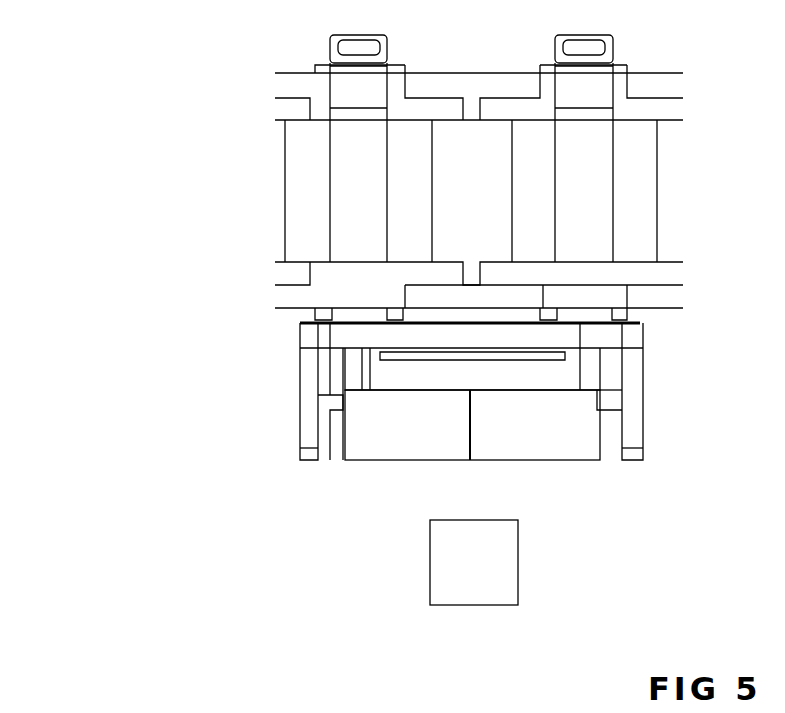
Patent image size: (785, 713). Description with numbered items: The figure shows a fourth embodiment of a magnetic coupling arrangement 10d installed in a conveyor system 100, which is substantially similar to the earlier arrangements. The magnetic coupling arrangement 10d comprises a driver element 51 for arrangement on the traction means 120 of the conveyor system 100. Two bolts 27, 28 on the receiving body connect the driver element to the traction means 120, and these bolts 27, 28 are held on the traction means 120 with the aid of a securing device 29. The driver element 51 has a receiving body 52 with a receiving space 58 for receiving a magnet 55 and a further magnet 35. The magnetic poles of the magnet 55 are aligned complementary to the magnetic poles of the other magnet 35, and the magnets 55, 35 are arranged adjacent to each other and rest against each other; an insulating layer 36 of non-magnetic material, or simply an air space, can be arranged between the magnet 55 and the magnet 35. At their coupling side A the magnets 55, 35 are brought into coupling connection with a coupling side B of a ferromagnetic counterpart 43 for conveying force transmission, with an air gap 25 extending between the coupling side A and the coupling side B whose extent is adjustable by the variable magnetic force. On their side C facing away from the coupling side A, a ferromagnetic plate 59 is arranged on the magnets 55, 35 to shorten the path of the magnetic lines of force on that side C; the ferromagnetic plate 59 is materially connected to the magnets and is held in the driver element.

The conveyor system 100 is at (146, 94).
The bolt 27 is at (310, 137).
The securing device 29 is at (612, 46).
The traction means 120 is at (310, 240).
The bolt 28 is at (600, 163).
The driver element 51 is at (278, 391).
The receiving body 52 is at (333, 340).
The magnet 55 is at (345, 420).
The receiving space 58 is at (556, 358).
The ferromagnetic plate 59 is at (596, 362).
The magnet 35 is at (570, 445).
The air gap 25 is at (490, 462).
The insulating layer 36 is at (472, 466).
The ferromagnetic counterpart 43 is at (508, 535).
The magnetic coupling arrangement 10d is at (262, 505).
The coupling side A is at (358, 470).
The coupling side B is at (448, 500).
The side facing away from the coupling side C is at (580, 383).